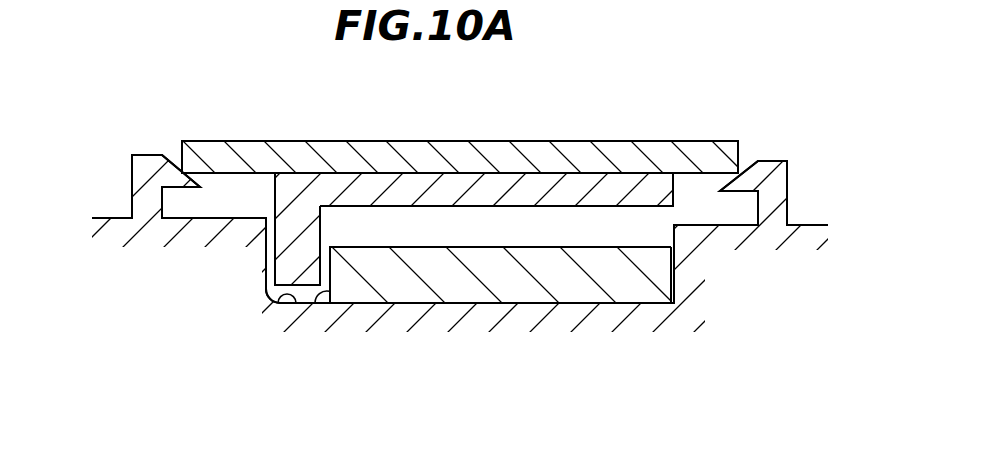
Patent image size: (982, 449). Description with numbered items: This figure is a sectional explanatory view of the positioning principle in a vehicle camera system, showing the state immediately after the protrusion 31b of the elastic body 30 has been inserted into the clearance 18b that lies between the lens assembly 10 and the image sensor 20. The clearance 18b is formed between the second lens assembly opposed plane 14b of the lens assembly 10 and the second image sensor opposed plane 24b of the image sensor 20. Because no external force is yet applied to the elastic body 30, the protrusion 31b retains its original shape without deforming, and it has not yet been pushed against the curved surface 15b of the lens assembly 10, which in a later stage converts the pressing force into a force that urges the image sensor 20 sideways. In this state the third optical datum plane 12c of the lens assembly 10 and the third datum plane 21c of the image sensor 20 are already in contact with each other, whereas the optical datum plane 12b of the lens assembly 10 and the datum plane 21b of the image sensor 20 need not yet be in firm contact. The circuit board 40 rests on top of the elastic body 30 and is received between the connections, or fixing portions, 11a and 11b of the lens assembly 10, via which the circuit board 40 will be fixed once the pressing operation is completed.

The lens assembly 10 is at (192, 264).
The connection (fixing portion) 11a is at (150, 160).
The connection (fixing portion) 11b is at (772, 165).
The optical datum plane 12b is at (676, 263).
The third optical datum plane 12c is at (567, 305).
The second lens assembly opposed plane 14b is at (256, 238).
The curved surface 15b is at (288, 301).
The clearance 18b is at (305, 292).
The image sensor 20 is at (474, 292).
The datum plane 21b is at (668, 290).
The third datum plane 21c is at (648, 304).
The second image sensor opposed plane 24b is at (318, 295).
The elastic body 30 is at (498, 188).
The protrusion 31b is at (288, 193).
The circuit board 40 is at (365, 155).